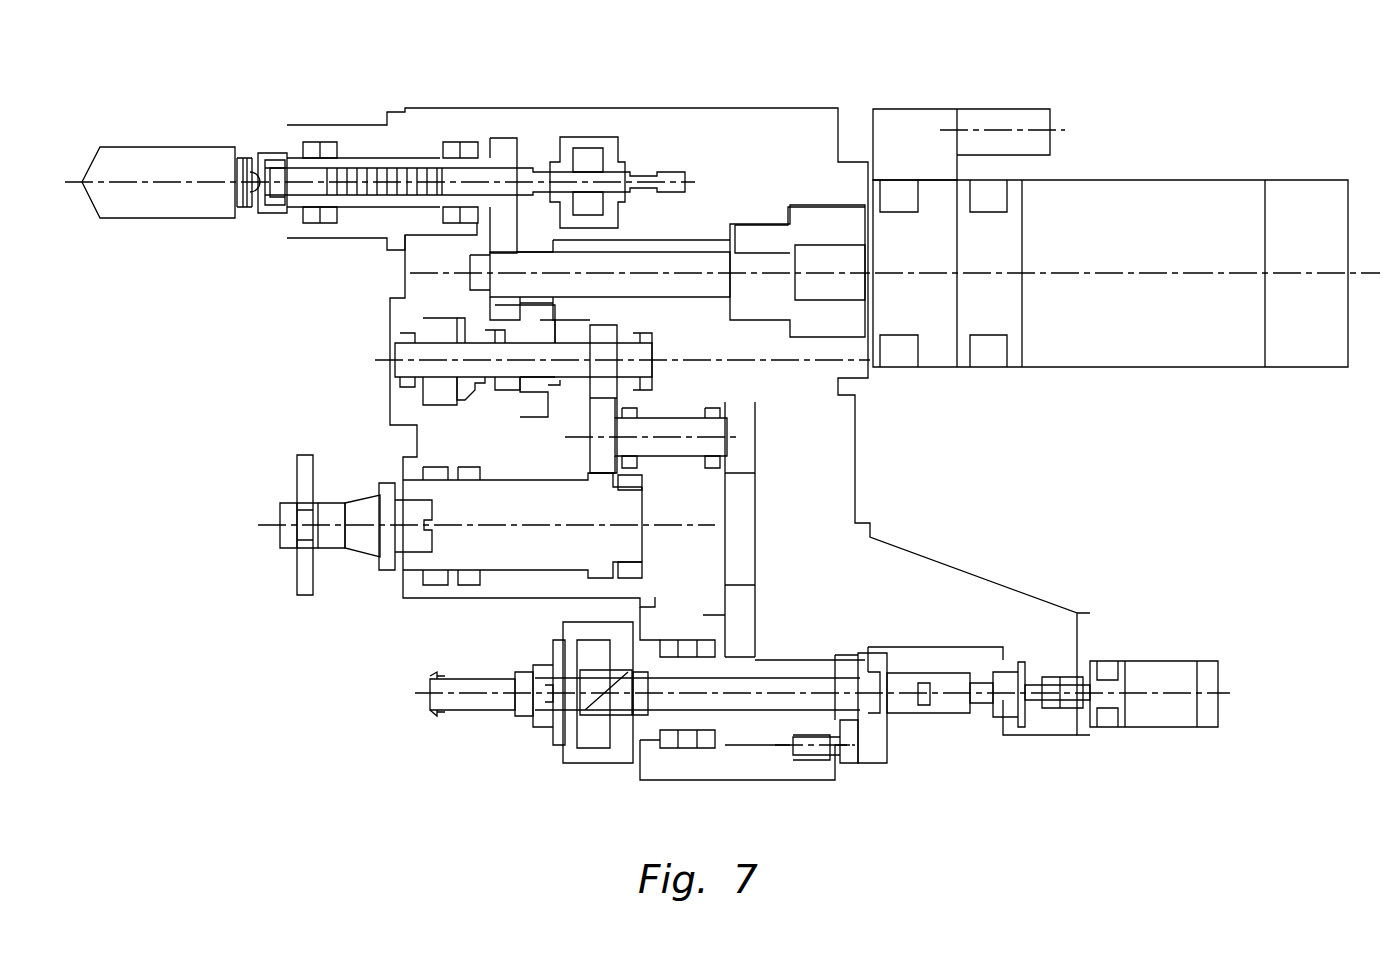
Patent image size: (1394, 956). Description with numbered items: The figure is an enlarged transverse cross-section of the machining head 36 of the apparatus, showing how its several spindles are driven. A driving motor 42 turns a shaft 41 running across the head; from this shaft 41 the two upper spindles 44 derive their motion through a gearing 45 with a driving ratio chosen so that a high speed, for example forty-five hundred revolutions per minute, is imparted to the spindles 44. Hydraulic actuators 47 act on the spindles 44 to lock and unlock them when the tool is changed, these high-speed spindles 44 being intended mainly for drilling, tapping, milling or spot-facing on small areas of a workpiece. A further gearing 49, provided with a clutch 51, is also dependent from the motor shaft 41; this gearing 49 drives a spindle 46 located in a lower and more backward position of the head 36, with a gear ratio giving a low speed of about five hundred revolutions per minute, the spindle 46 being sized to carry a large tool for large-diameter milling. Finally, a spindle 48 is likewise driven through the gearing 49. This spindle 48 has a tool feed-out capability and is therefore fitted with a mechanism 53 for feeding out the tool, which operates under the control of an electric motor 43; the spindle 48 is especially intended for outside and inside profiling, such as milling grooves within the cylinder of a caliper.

The machining head 36 is at (727, 130).
The shaft 41 is at (698, 262).
The driving motor 42 is at (1173, 202).
The electric motor 43 is at (1152, 673).
The upper spindles 44 is at (277, 160).
The gearing 45 is at (503, 148).
The spindle 46 is at (365, 517).
The hydraulic actuators 47 is at (588, 152).
The spindle 48 is at (585, 735).
The further gearing 49 is at (645, 368).
The clutch 51 is at (467, 353).
The mechanism for feeding out the tool 53 is at (957, 698).